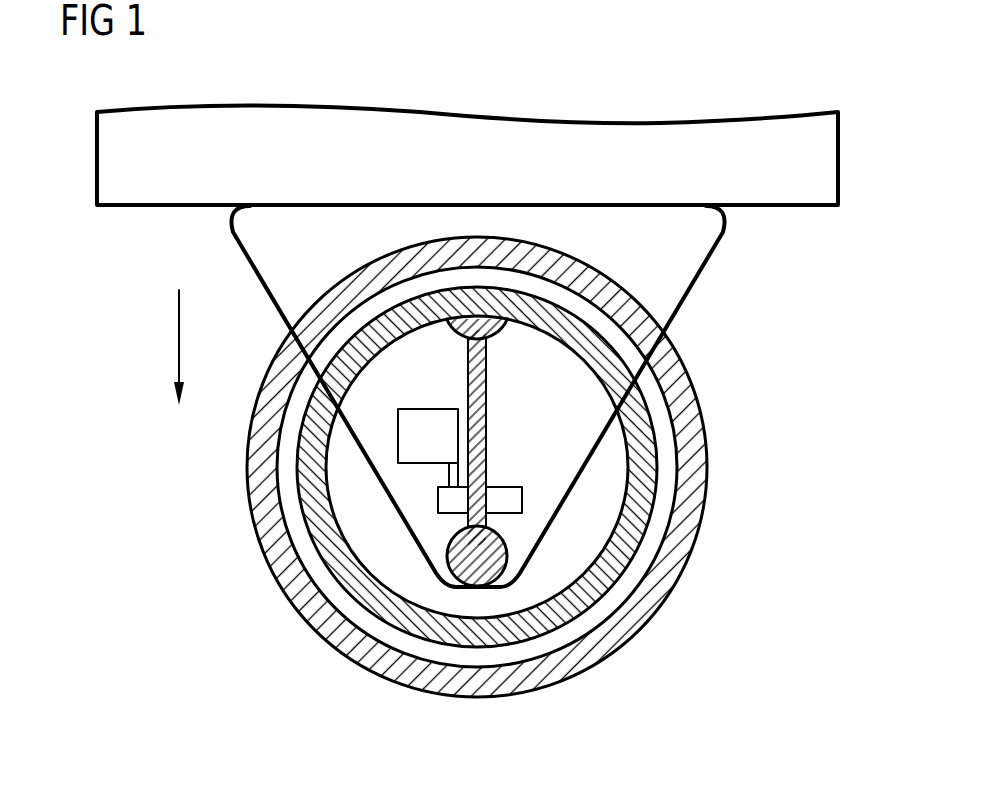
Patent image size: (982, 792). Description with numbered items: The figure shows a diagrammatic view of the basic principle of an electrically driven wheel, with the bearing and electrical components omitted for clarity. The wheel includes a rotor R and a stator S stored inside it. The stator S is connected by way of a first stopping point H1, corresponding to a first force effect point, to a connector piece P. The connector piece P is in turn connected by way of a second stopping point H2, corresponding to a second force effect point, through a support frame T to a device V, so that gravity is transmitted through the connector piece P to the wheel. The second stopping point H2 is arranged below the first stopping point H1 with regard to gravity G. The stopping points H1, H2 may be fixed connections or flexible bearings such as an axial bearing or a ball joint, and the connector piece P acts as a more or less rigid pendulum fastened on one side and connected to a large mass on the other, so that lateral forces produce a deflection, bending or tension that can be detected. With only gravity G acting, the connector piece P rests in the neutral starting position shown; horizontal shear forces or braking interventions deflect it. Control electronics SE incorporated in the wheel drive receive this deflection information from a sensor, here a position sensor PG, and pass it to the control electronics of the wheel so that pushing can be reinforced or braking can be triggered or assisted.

The device V is at (651, 121).
The rotor R is at (708, 487).
The stator S is at (624, 502).
The support frame T is at (700, 282).
The control electronics SE is at (398, 445).
The position sensor PG is at (510, 487).
The connector piece P is at (488, 387).
The first stopping point H1 is at (449, 337).
The second stopping point H2 is at (448, 557).
The gravity G is at (169, 347).